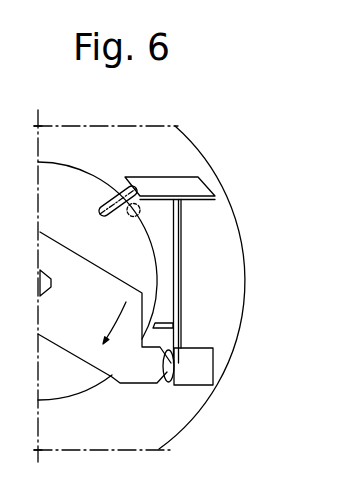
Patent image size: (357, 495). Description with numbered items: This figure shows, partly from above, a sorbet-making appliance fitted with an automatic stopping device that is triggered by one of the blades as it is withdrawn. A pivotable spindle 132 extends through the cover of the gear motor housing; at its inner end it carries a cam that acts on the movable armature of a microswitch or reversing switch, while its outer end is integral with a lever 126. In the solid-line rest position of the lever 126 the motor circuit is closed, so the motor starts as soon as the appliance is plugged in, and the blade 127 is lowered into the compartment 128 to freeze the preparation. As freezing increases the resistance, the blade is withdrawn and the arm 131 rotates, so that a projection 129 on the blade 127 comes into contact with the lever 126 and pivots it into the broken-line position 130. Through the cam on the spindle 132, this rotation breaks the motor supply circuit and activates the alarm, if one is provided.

The lever 126 is at (115, 190).
The blade 127 is at (181, 276).
The compartment 128 is at (233, 339).
The projection 129 is at (158, 324).
The pivoted position of the lever 130 is at (128, 218).
The arm 131 is at (62, 331).
The pivotable spindle 132 is at (107, 215).